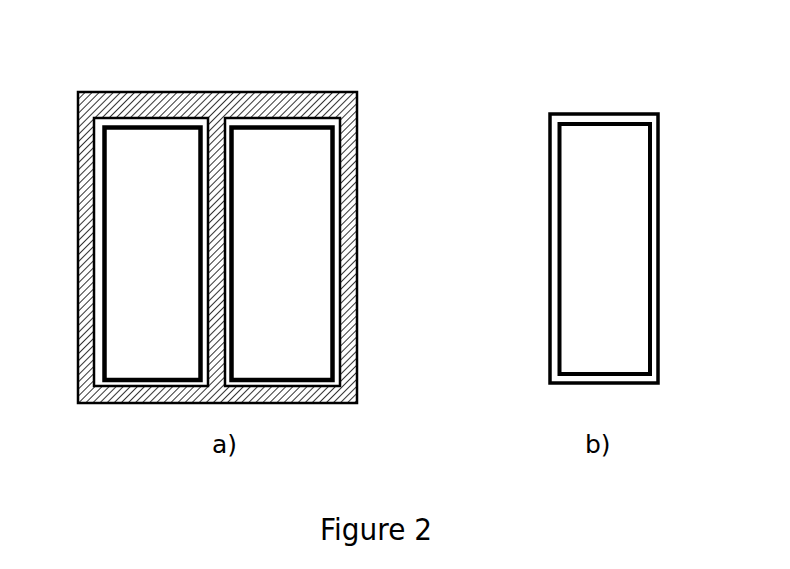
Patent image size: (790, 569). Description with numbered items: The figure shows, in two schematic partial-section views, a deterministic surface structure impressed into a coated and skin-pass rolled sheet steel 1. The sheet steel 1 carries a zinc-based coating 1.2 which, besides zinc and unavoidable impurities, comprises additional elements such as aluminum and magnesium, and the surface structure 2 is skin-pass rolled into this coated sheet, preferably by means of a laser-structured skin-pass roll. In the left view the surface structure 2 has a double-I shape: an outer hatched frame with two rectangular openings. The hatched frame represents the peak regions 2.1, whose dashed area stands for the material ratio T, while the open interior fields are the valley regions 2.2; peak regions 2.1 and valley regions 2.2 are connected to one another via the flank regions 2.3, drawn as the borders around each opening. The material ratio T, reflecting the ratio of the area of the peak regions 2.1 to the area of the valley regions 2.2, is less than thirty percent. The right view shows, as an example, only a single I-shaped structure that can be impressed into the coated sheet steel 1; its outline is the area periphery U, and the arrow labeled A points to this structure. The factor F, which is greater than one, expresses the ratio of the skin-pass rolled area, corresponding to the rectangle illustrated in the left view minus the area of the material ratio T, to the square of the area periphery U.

The sheet steel 1 is at (260, 215).
The zinc-based coating 1.2 is at (260, 215).
The deterministic surface structure 2 is at (260, 215).
The peak regions 2.1 is at (358, 365).
The valley regions 2.2 is at (295, 257).
The flank regions 2.3 is at (340, 198).
The material ratio T is at (351, 93).
The area periphery U is at (548, 163).
The cut-out / insert A is at (612, 96).